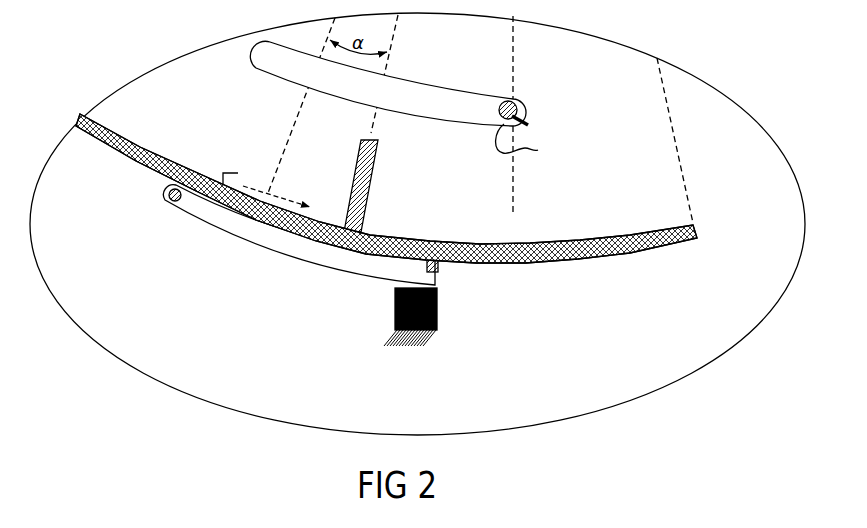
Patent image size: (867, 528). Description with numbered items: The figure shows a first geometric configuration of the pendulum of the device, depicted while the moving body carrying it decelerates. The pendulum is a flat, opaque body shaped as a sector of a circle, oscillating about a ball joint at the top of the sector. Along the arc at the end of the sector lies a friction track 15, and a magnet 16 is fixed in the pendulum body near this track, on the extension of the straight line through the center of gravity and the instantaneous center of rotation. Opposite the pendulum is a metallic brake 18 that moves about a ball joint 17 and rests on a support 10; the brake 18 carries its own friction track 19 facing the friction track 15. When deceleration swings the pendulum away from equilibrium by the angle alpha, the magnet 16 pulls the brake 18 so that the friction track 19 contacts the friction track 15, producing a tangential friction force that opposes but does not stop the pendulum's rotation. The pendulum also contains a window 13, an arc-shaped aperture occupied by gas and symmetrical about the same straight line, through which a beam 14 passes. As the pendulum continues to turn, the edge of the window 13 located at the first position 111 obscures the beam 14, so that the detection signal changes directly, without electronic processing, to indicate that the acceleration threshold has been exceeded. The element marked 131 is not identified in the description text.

The support 10 is at (393, 312).
The window 13 is at (294, 79).
The beam 14 is at (526, 97).
The friction track 15 is at (638, 242).
The magnet 16 is at (378, 175).
The ball joint 17 is at (168, 196).
The brake 18 is at (251, 238).
The friction track 19 is at (436, 266).
The first position 111 is at (528, 157).
The pin 131 is at (509, 115).